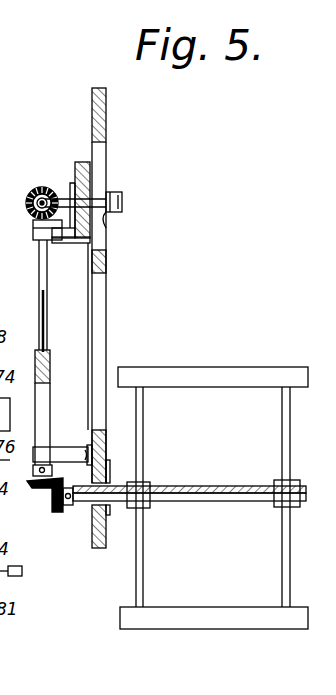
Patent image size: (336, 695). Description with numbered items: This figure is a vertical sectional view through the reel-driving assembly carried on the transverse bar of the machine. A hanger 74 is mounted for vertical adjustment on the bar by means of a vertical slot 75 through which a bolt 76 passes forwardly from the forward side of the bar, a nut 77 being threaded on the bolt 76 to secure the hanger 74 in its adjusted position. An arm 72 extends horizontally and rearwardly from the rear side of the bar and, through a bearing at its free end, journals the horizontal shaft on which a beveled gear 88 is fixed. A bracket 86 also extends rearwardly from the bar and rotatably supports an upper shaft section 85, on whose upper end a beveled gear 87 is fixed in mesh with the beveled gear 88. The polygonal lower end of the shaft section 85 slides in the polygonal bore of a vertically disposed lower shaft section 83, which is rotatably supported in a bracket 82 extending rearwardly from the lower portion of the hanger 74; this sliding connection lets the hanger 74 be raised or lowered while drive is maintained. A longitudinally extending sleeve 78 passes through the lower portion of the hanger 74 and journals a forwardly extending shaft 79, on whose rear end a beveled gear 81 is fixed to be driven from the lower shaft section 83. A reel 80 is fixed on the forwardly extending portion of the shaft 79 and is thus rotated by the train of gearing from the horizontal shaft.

The hanger 74 is at (107, 118).
The vertical slot 75 is at (107, 172).
The arm 72 is at (66, 175).
The bracket 86 is at (67, 243).
The beveled gear 88 is at (34, 194).
The beveled gear 87 is at (32, 226).
The nut 77 is at (123, 203).
The bolt 76 is at (108, 228).
The shaft section 85 is at (40, 278).
The shaft section 83 is at (51, 402).
The bracket 82 is at (58, 456).
The beveled gear 81 is at (53, 510).
The shaft 79 is at (88, 502).
The sleeve 78 is at (88, 510).
The reel 80 is at (197, 374).